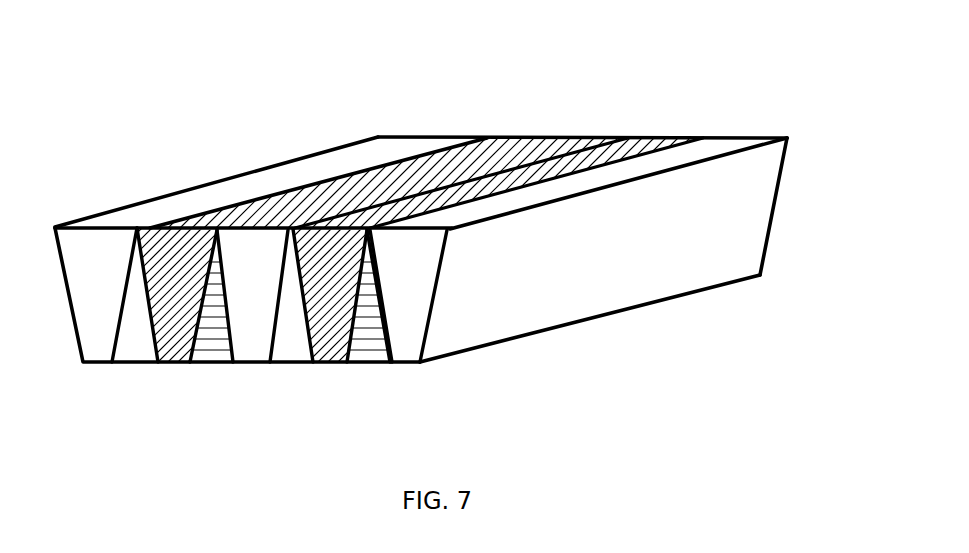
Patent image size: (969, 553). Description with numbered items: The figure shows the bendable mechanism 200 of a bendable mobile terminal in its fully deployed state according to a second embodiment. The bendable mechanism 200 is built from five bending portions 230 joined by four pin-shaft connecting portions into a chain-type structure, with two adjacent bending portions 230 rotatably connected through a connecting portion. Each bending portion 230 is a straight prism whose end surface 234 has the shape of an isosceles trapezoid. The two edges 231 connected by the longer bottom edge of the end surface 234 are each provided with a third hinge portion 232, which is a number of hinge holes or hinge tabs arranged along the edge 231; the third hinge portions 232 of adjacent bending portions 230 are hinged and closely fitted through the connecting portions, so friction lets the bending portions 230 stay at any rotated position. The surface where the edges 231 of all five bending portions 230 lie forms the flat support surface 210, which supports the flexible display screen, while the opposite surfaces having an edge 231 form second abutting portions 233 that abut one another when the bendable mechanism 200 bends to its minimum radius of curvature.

The bendable mechanism 200 is at (480, 98).
The support surface 210 is at (207, 207).
The bending portion 230 is at (253, 350).
The edge 231 is at (790, 143).
The third hinge portion 232 is at (456, 227).
The second abutting portion 233 is at (662, 240).
The end surface 234 is at (372, 272).